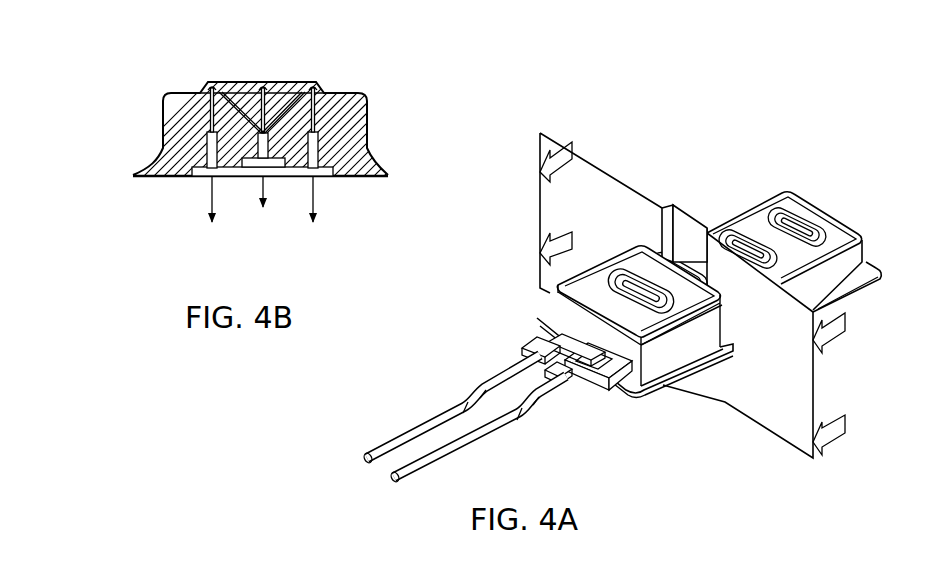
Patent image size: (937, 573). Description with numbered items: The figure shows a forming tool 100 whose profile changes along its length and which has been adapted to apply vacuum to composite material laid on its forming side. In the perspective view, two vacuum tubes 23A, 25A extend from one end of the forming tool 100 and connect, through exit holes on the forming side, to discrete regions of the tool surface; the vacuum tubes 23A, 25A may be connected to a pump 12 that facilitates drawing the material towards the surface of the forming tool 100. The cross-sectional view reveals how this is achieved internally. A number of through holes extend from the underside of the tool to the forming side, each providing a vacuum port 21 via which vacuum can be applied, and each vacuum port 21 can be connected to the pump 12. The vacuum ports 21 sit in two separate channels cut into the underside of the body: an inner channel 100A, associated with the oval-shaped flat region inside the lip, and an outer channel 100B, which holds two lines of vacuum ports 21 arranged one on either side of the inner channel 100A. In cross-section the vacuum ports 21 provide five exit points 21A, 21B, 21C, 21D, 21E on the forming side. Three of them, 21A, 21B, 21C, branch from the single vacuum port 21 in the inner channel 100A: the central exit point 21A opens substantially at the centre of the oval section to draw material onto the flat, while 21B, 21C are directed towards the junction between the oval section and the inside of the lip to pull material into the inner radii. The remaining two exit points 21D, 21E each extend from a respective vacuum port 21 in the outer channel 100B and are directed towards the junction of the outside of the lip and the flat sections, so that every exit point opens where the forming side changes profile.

In FIG. 4B, the forming tool 100 is at (130, 124).
In FIG. 4A, the forming tool 100 is at (757, 172).
In FIG. 4B, the inner channel 100A is at (250, 163).
In FIG. 4B, the outer channel 100B is at (300, 176).
In FIG. 4B, the vacuum port 21 is at (208, 142).
In FIG. 4B, the central exit point 21A is at (262, 130).
In FIG. 4B, the exit point 21B is at (230, 91).
In FIG. 4B, the exit point 21C is at (280, 92).
In FIG. 4B, the outer exit point 21D is at (198, 93).
In FIG. 4B, the outer exit point 21E is at (375, 75).
In FIG. 4A, the pump 12 is at (390, 474).
In FIG. 4A, the vacuum tube 23A is at (462, 438).
In FIG. 4A, the vacuum tube 25A is at (410, 433).